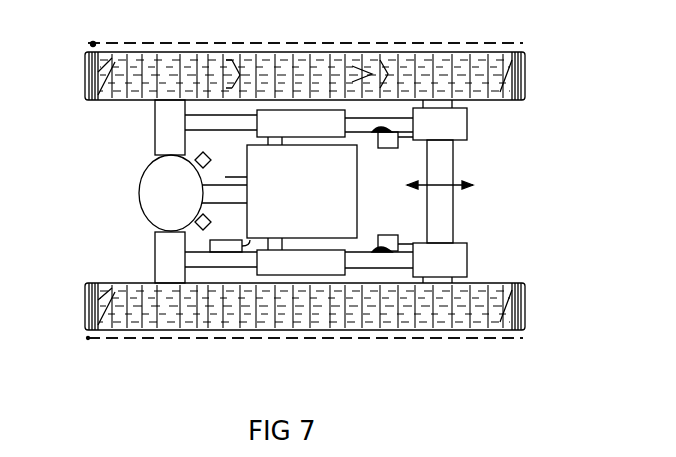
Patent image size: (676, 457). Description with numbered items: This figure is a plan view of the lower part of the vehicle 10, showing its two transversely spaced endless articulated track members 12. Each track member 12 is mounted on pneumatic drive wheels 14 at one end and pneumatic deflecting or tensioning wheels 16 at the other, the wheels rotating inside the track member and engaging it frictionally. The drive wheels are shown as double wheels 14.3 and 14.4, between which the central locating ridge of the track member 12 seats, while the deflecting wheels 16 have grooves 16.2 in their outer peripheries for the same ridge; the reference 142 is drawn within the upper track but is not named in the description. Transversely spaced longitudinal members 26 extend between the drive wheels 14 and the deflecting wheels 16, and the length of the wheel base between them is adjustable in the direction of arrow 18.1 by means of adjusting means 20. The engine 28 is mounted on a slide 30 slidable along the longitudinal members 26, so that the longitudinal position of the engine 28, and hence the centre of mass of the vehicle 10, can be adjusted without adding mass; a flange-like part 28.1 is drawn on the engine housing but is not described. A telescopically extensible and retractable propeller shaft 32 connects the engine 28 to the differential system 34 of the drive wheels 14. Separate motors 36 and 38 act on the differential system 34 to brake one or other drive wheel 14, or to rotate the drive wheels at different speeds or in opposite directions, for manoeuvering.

The vehicle 10 is at (105, 396).
The endless articulated track member 12 is at (535, 78).
The pneumatic drive wheel 14 is at (193, 34).
The double wheel 14.3 is at (95, 40).
The double wheel 14.4 is at (90, 104).
The track drive element 142 is at (248, 62).
The pneumatic deflecting wheel 16 is at (461, 30).
The groove 16.2 is at (368, 68).
The arrow 18.1 is at (440, 186).
The adjusting means 20 is at (388, 150).
The longitudinal member 26 is at (379, 190).
The engine 28 is at (302, 193).
The housing flange 28.1 is at (225, 248).
The slide 30 is at (265, 192).
The propeller shaft 32 is at (240, 186).
The differential system 34 is at (128, 183).
The motor 36 is at (210, 160).
The motor 38 is at (210, 222).